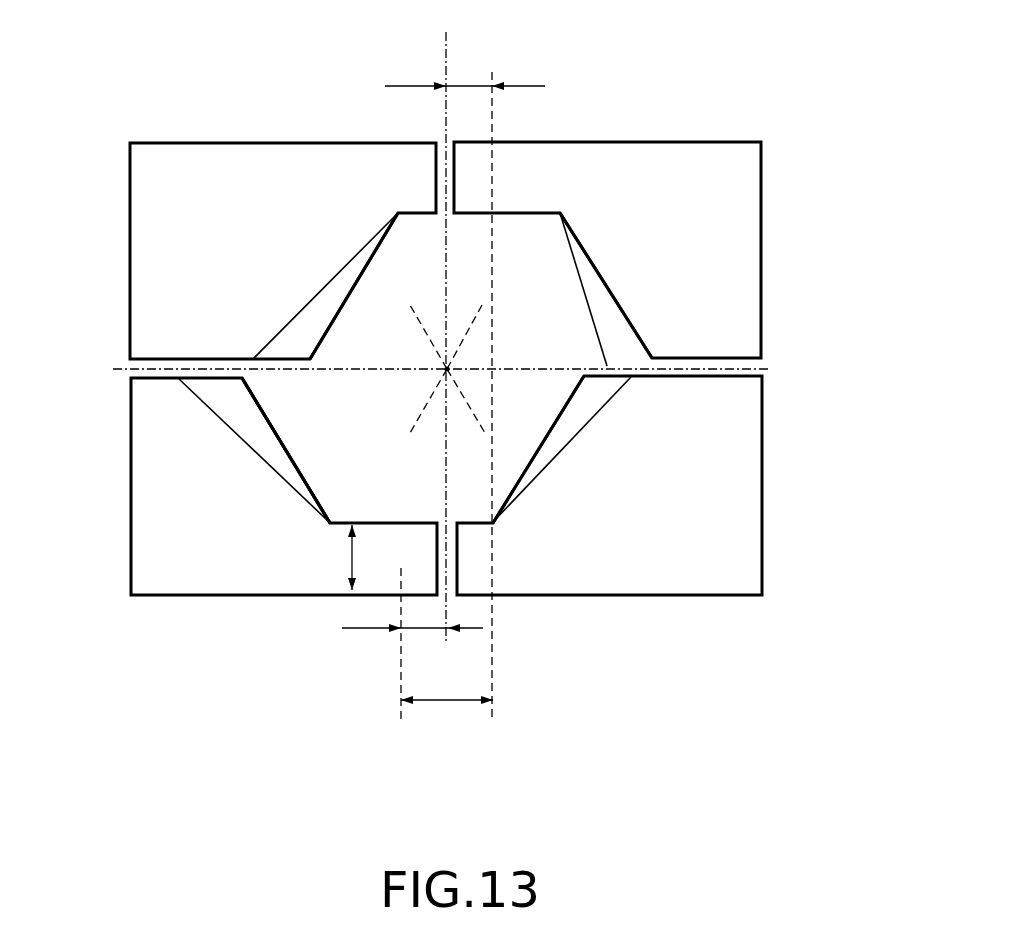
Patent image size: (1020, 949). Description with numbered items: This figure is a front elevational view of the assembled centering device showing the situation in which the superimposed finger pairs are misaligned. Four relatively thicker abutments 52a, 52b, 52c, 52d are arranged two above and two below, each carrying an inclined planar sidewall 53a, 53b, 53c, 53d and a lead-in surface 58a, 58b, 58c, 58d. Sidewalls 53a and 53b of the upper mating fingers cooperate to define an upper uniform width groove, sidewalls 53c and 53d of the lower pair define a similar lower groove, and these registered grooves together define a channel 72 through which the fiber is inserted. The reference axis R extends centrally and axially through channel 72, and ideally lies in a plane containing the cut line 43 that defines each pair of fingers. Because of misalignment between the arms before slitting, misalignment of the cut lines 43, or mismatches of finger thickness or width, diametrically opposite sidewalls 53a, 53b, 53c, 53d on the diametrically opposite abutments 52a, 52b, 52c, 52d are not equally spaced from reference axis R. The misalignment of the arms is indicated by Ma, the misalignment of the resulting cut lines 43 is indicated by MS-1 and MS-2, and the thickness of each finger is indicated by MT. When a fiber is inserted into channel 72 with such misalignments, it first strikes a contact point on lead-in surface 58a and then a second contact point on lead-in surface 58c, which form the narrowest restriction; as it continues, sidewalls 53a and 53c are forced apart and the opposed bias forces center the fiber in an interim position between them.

The cut line 43 is at (441, 324).
The abutment 52a is at (128, 190).
The abutment 52b is at (763, 170).
The abutment 52c is at (765, 532).
The abutment 52d is at (130, 520).
The planar sidewall 53a is at (360, 273).
The planar sidewall 53b is at (578, 273).
The planar sidewall 53c is at (548, 432).
The planar sidewall 53d is at (270, 433).
The lead-in surface 58a is at (308, 325).
The lead-in surface 58b is at (610, 323).
The lead-in surface 58c is at (593, 396).
The lead-in surface 58d is at (227, 392).
The channel 72 is at (297, 402).
The reference axis R is at (446, 368).
The cut line misalignment MS-1 is at (467, 83).
The cut line misalignment MS-2 is at (418, 629).
The arm misalignment Ma is at (445, 703).
The finger thickness MT is at (350, 560).